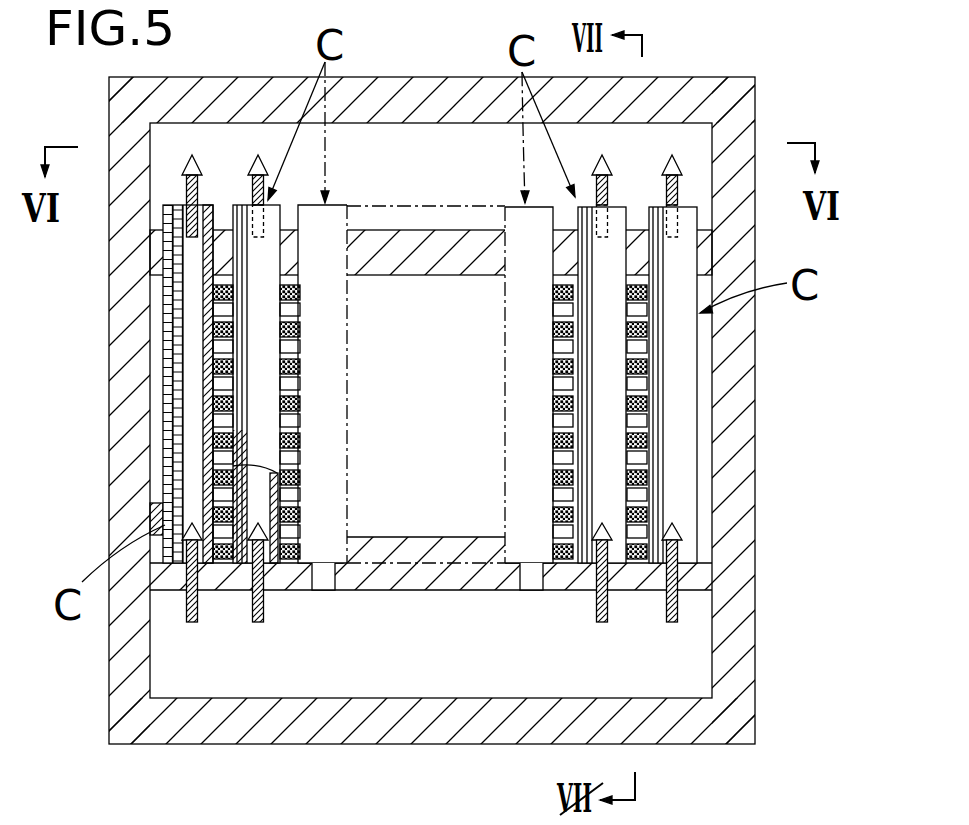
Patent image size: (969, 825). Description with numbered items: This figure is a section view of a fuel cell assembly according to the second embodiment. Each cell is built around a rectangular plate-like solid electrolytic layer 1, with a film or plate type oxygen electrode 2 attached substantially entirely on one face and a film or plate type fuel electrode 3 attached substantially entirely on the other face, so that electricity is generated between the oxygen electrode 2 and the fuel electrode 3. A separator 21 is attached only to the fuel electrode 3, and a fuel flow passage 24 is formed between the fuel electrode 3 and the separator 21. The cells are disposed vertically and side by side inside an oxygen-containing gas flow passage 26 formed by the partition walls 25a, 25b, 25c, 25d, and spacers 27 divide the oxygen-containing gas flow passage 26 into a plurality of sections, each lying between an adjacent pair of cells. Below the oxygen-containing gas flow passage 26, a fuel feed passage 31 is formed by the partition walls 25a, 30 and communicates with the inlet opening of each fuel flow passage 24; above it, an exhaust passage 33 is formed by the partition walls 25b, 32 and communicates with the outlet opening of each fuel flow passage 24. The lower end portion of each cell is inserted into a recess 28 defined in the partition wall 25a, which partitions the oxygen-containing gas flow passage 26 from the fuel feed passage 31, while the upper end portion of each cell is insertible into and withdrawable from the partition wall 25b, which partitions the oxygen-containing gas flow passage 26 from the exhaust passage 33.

The solid electrolytic layer 1 is at (165, 488).
The oxygen electrode 2 is at (165, 422).
The fuel electrode 3 is at (158, 515).
The separator 21 is at (218, 558).
The fuel flow passage 24 is at (257, 623).
The partition wall 25a is at (438, 590).
The partition wall 25b is at (443, 275).
The partition wall 25c is at (112, 342).
The partition wall 25d is at (755, 377).
The oxygen-containing gas flow passage 26 is at (425, 384).
The spacer 27 is at (298, 327).
The recess 28 is at (303, 560).
The partition wall 30 is at (443, 744).
The fuel feed passage 31 is at (412, 673).
The partition wall 32 is at (437, 77).
The exhaust passage 33 is at (428, 163).